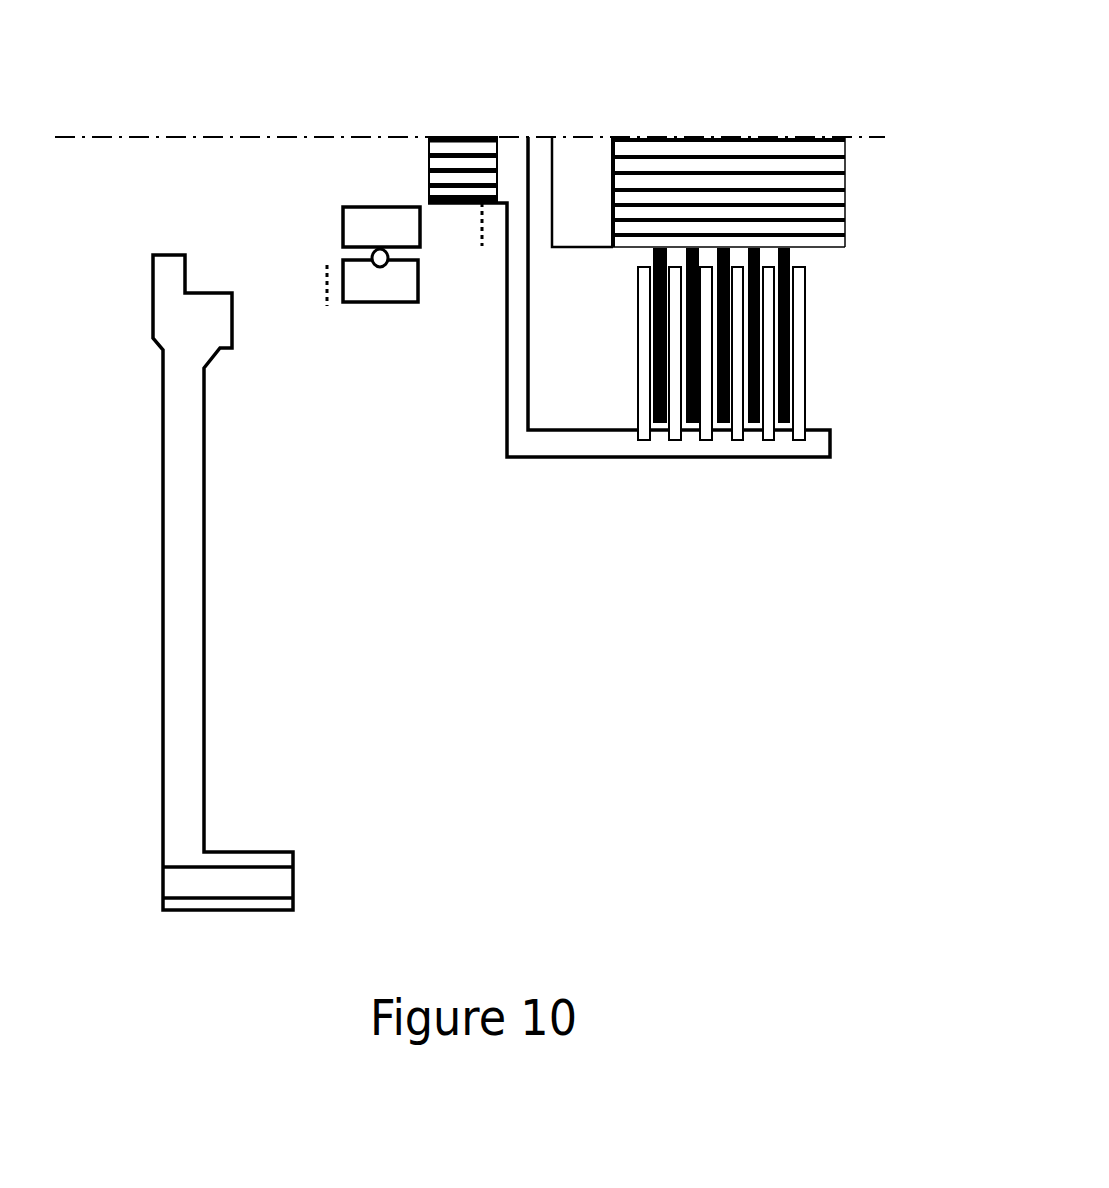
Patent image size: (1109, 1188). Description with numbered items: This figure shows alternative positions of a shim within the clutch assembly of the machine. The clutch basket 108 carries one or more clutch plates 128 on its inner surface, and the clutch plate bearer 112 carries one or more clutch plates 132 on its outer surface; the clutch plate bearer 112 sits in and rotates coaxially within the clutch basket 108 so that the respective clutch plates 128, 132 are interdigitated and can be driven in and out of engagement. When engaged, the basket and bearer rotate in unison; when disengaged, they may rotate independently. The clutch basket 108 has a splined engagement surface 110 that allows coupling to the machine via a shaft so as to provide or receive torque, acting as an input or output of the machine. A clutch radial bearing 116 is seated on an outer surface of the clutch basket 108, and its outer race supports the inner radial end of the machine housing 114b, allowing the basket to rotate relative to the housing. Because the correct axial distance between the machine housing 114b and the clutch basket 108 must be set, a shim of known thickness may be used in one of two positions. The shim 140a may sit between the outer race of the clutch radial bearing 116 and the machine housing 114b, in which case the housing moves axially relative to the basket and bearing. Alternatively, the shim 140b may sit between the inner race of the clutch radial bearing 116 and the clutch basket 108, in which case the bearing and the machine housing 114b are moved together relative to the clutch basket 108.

The clutch basket 108 is at (510, 427).
The engagement surface 110 is at (430, 150).
The clutch plate bearer 112 is at (847, 245).
The second machine housing 114b is at (185, 763).
The clutch radial bearing 116 is at (372, 208).
The clutch plates 128 is at (798, 362).
The clutch plates 132 is at (785, 398).
The shim 140a is at (325, 283).
The shim 140b is at (482, 237).